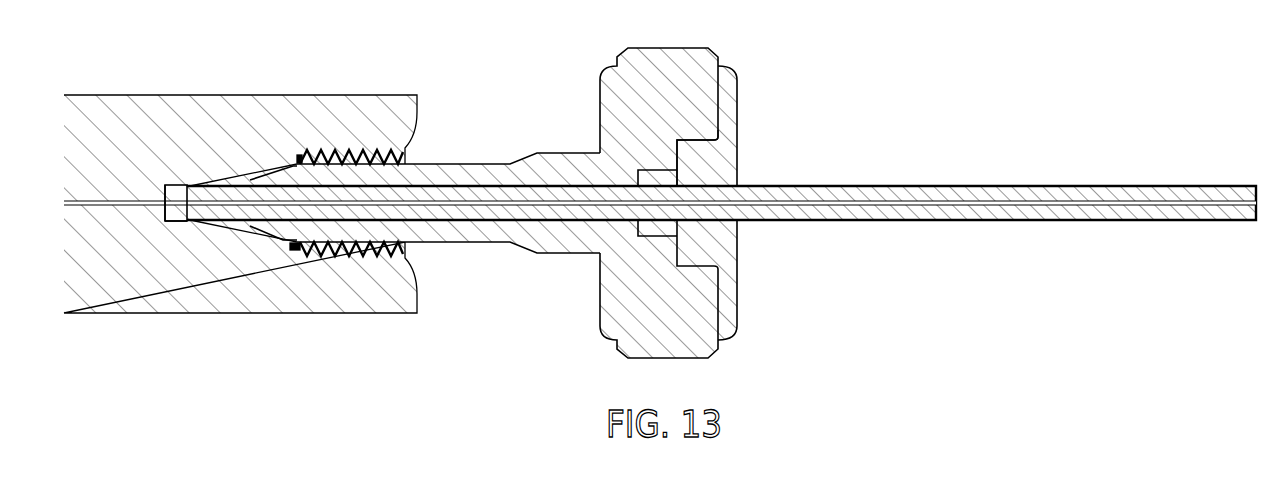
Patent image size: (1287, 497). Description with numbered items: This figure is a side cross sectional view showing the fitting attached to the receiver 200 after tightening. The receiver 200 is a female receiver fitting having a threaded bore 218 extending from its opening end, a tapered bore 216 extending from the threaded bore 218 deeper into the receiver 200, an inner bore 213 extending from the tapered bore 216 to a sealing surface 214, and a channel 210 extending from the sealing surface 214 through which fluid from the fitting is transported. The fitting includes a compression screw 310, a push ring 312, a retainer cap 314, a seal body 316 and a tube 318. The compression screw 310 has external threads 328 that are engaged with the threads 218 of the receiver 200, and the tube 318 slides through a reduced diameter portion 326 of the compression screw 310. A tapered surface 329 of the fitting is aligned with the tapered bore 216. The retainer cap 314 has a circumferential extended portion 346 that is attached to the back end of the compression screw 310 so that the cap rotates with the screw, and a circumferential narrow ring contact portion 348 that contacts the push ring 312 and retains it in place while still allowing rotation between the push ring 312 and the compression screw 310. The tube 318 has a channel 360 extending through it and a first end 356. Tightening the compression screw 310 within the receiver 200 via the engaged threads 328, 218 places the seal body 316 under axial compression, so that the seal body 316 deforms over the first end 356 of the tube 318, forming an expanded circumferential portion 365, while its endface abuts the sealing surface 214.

The receiver 200 is at (244, 100).
The channel 210 is at (100, 200).
The inner bore 213 is at (222, 228).
The sealing surface 214 is at (165, 208).
The tapered bore 216 is at (265, 248).
The threaded bore 218 is at (347, 257).
The compression screw 310 is at (665, 56).
The push ring 312 is at (652, 176).
The retainer cap 314 is at (742, 80).
The seal body 316 is at (177, 187).
The tube 318 is at (1058, 186).
The reduced diameter portion 326 is at (283, 181).
The external threads 328 is at (357, 150).
The tapered surface 329 is at (246, 176).
The circumferential extended portion 346 is at (703, 148).
The circumferential narrow ring contact portion 348 is at (680, 187).
The first end 356 is at (176, 220).
The channel 360 is at (1163, 201).
The expanded circumferential portion 365 is at (165, 192).